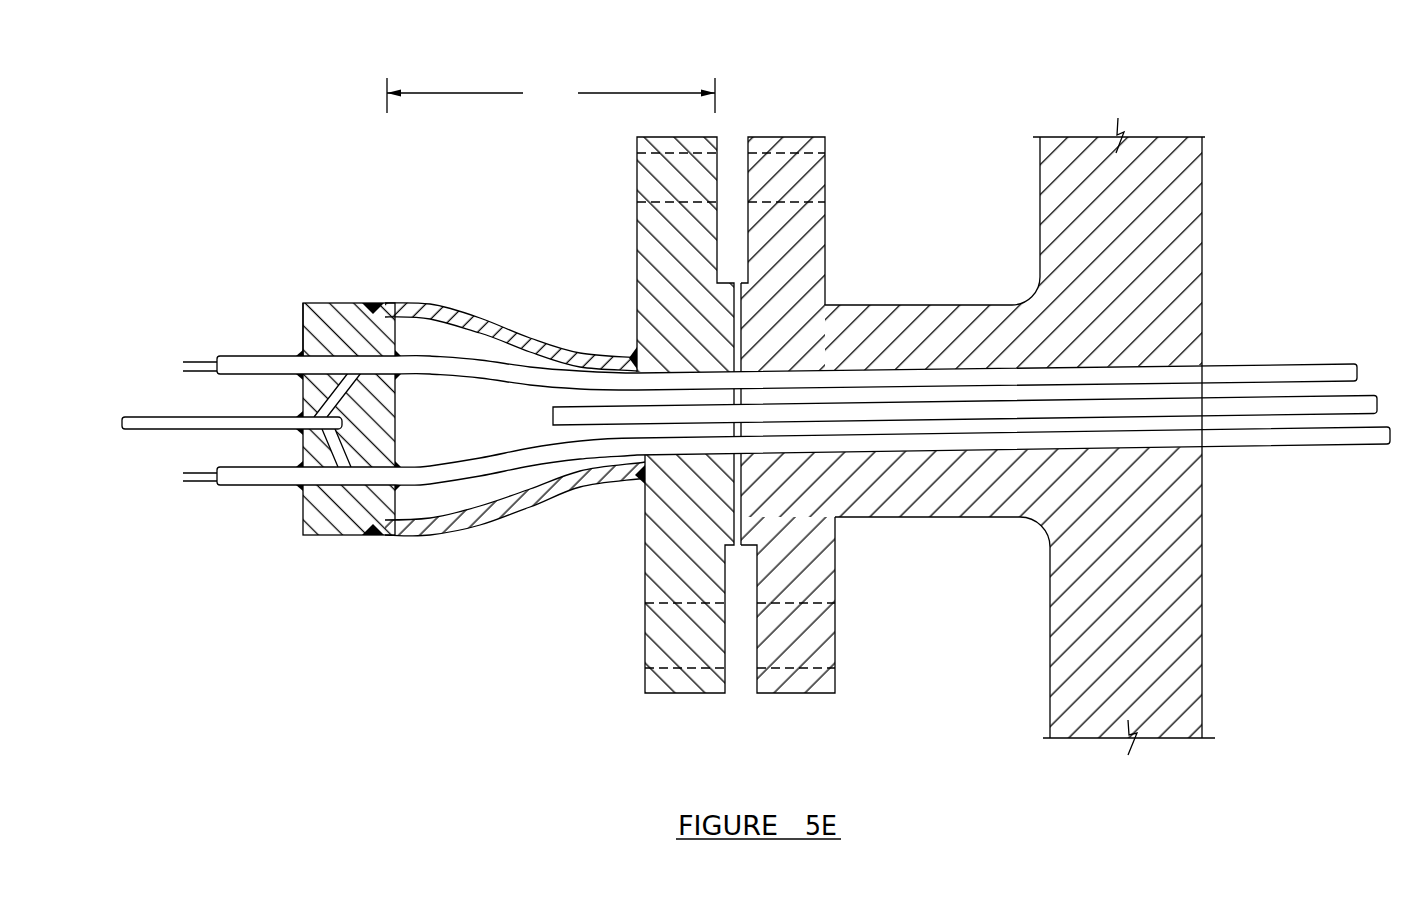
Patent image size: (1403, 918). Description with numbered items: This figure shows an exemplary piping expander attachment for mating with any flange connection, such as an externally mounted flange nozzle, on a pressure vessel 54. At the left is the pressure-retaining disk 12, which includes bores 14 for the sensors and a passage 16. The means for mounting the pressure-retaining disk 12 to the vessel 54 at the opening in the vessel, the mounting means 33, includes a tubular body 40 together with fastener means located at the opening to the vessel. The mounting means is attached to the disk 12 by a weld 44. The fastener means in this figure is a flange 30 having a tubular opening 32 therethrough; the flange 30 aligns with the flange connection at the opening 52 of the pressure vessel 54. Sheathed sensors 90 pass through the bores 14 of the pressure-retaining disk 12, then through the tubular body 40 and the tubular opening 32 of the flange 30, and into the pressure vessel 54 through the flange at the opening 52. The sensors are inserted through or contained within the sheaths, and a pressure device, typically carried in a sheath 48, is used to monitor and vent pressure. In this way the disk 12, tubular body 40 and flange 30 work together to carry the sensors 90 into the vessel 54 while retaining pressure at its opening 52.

The pressure-retaining disk 12 is at (322, 303).
The bores 14 is at (302, 310).
The passage 16 is at (328, 447).
The flange 30 is at (685, 693).
The tubular opening 32 is at (438, 423).
The mounting means 33 is at (551, 95).
The tubular body 40 is at (518, 332).
The weld 44 is at (372, 303).
The sheath 48 is at (117, 424).
The opening 52 is at (848, 303).
The pressure vessel 54 is at (1158, 135).
The sheathed sensors 90 is at (197, 362).